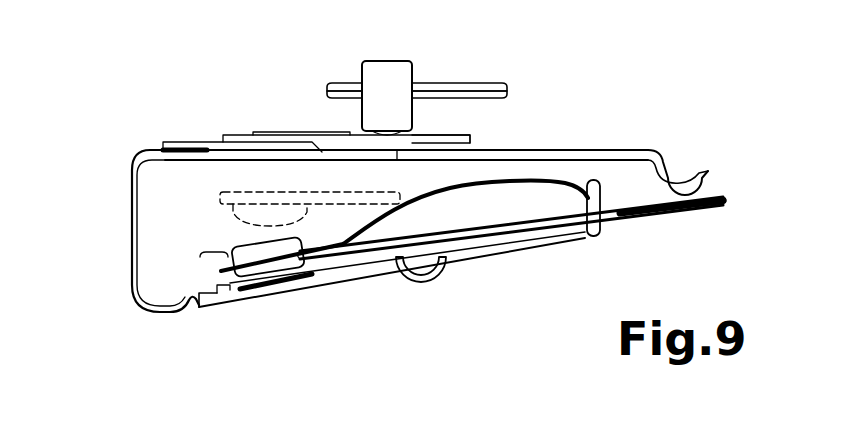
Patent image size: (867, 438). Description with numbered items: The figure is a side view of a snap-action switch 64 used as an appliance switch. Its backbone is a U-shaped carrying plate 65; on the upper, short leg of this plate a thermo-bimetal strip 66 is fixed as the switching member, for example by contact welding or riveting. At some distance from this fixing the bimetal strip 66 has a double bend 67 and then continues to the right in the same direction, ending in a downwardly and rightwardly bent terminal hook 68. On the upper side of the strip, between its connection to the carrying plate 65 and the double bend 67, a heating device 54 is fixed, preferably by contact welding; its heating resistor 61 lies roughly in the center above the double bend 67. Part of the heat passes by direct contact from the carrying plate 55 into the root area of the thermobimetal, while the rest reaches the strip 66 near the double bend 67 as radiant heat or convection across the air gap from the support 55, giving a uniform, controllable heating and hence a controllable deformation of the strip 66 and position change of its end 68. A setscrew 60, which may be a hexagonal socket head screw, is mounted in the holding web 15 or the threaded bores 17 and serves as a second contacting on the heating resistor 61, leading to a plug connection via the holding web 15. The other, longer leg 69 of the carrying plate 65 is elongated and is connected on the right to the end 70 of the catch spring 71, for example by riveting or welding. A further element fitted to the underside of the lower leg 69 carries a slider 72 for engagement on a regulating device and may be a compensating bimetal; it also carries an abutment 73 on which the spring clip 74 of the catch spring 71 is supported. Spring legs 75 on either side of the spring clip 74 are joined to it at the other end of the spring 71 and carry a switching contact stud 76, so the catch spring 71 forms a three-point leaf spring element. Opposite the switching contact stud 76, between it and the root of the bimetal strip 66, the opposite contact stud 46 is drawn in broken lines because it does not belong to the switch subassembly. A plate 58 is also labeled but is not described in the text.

The holding web 15 is at (470, 89).
The threaded bores 17 is at (410, 83).
The opposite contact stud 46 is at (233, 223).
The heating device 54 is at (284, 100).
The carrying plate (heating means support) 55 is at (472, 139).
The plate 58 is at (241, 133).
The setscrew 60 is at (389, 61).
The heating resistor 61 is at (303, 130).
The snap-action switch 64 is at (122, 143).
The carrying plate 65 is at (127, 236).
The thermo-bimetal strip 66 is at (192, 141).
The double bend 67 is at (310, 157).
The terminal hook 68 is at (683, 177).
The longer leg 69 is at (188, 315).
The end of catch spring 70 is at (725, 198).
The catch spring 71 is at (620, 204).
The slider 72 is at (422, 286).
The abutment 73 is at (596, 198).
The spring clip 74 is at (514, 188).
The spring legs 75 is at (423, 236).
The switching contact stud 76 is at (227, 252).